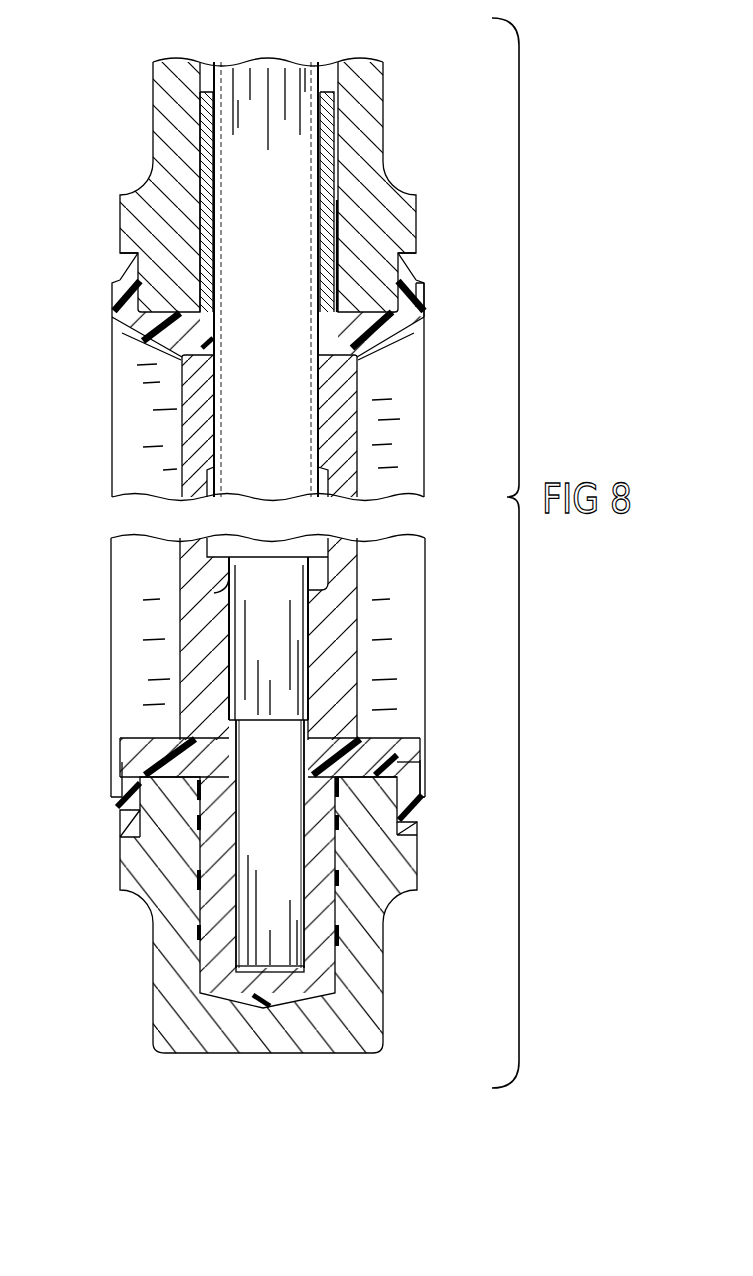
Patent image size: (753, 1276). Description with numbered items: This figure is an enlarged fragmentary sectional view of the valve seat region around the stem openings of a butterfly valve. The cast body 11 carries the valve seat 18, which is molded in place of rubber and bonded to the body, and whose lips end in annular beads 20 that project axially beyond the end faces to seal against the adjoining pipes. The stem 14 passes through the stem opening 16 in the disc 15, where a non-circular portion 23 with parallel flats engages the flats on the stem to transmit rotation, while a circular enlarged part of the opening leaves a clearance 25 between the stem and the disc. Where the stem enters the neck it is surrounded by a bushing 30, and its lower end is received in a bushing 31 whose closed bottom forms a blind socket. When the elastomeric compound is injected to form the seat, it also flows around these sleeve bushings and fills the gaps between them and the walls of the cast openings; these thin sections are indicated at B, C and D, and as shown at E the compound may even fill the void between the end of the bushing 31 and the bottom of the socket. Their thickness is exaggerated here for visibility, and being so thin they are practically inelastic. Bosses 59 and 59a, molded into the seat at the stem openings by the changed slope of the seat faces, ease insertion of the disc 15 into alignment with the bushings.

The body 11 is at (140, 179).
The stem 14 is at (284, 78).
The disc 15 is at (358, 423).
The stem opening 16 is at (182, 433).
The valve seat 18 is at (397, 477).
The annular bead 20 is at (424, 797).
The non-circular portion 23 is at (228, 688).
The clearance 25 is at (187, 607).
The bushing 30 is at (332, 119).
The bushing 31 is at (212, 953).
The boss 59 is at (143, 337).
The boss 59a is at (400, 340).
The thin section of injected compound B is at (338, 173).
The thin section of injected compound C is at (343, 940).
The thin section of injected compound D is at (190, 849).
The elastomeric fill E is at (273, 1008).